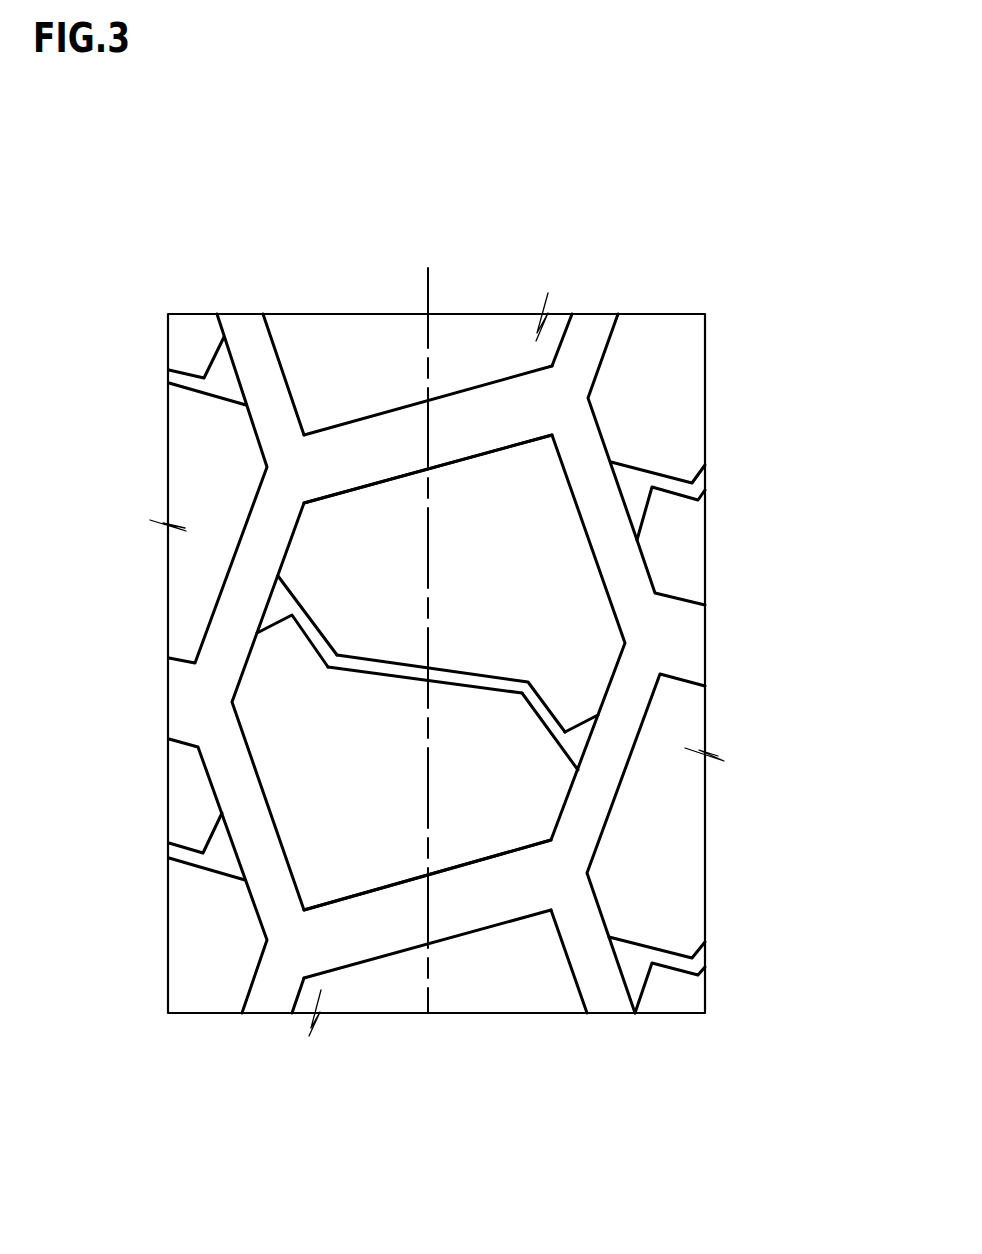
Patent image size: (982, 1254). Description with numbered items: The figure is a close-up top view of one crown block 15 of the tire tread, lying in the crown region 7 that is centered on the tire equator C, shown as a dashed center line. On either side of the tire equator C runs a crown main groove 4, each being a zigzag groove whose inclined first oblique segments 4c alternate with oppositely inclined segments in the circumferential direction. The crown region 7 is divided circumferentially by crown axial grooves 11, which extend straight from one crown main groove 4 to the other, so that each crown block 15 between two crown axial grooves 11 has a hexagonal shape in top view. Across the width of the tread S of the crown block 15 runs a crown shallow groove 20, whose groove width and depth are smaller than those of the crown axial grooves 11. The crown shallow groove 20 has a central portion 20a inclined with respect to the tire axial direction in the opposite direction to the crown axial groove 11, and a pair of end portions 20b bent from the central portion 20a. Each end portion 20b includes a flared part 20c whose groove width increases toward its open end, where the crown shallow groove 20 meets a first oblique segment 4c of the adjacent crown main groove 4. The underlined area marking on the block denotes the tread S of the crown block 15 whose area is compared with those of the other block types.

The crown main groove 4 is at (250, 345).
The first oblique segment 4c is at (268, 530).
The crown region 7 is at (467, 348).
The crown axial groove 11 is at (507, 413).
The crown block 15 is at (372, 548).
The crown shallow groove 20 is at (328, 831).
The central portion 20a is at (411, 692).
The end portion 20b is at (310, 629).
The flared part 20c is at (280, 605).
The tire equator C is at (427, 624).
The tread S is at (547, 543).